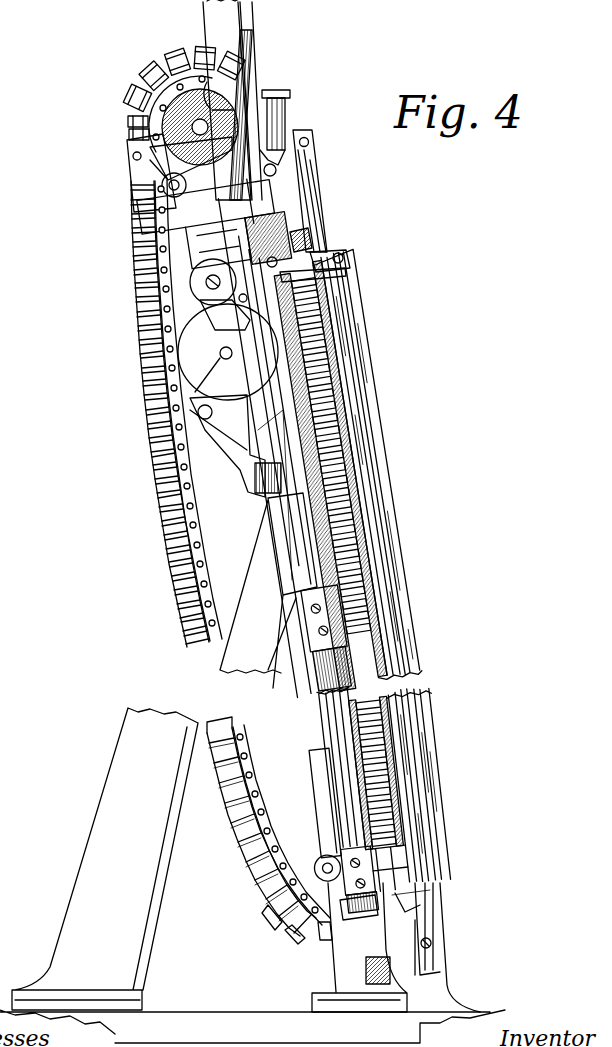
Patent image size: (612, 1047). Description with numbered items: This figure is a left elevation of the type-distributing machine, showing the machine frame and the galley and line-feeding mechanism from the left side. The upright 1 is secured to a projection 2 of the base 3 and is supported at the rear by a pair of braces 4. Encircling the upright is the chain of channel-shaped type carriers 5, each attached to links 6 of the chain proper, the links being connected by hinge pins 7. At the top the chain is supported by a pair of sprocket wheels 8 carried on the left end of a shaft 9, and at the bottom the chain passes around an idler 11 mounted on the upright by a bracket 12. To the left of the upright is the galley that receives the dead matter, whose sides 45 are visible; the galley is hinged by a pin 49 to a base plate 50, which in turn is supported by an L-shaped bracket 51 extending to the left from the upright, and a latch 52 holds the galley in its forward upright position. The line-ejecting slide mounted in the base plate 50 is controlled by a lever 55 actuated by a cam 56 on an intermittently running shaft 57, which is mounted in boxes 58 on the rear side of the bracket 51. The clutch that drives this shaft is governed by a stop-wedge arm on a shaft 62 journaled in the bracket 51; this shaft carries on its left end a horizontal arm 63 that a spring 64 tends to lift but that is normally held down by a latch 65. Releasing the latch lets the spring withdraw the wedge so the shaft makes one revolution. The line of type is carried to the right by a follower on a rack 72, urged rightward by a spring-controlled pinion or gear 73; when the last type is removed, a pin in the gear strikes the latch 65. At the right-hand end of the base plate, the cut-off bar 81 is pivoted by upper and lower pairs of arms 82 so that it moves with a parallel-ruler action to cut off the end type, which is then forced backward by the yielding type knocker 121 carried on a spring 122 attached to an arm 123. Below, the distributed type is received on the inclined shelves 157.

The upright 1 is at (327, 713).
The projection 2 is at (345, 940).
The base 3 is at (197, 1020).
The braces 4 is at (122, 777).
The type carriers 5 is at (150, 459).
The links 6 is at (194, 531).
The hinge pins 7 is at (200, 565).
The sprocket wheels 8 is at (190, 103).
The shaft 9 is at (205, 128).
The idler 11 is at (310, 840).
The bracket 12 is at (328, 807).
The sides 45 is at (212, 16).
The pin 49 is at (170, 184).
The base plate 50 is at (145, 212).
The L-shaped bracket 51 is at (262, 453).
The latch 52 is at (130, 120).
The lever 55 is at (170, 280).
The cam 56 is at (183, 351).
The shaft 57 is at (178, 375).
The boxes 58 is at (215, 322).
The shaft 62 is at (243, 300).
The horizontal arm 63 is at (302, 290).
The spring 64 is at (300, 276).
The latch 65 is at (340, 262).
The rack 72 is at (298, 176).
The pinion or gear 73 is at (307, 238).
The cut-off bar 81 is at (281, 121).
The arms 82 is at (273, 93).
The type knocker 121 is at (307, 180).
The spring 122 is at (312, 200).
The arm 123 is at (338, 231).
The shelves 157 is at (377, 748).